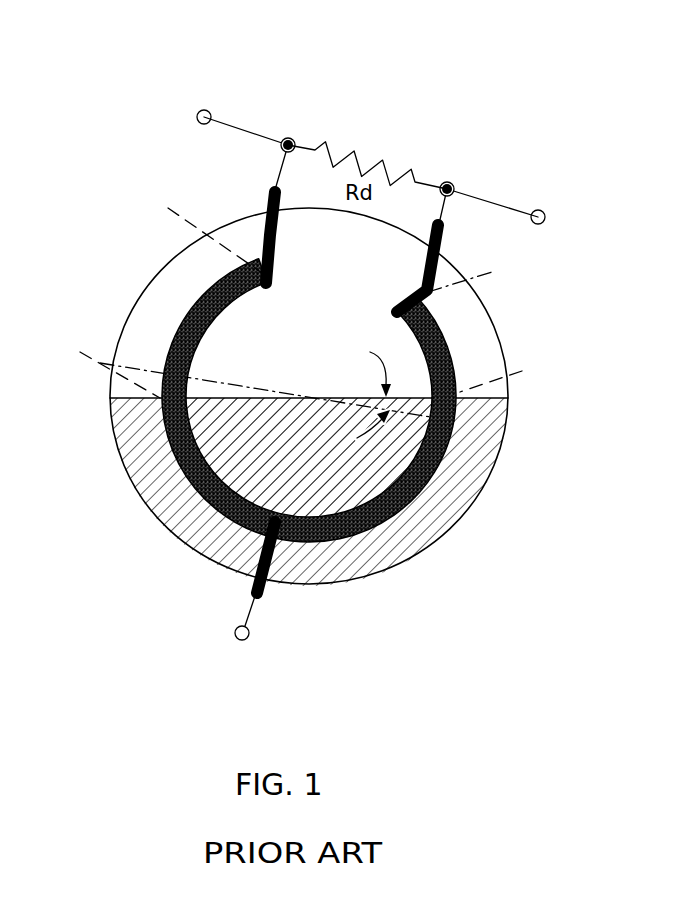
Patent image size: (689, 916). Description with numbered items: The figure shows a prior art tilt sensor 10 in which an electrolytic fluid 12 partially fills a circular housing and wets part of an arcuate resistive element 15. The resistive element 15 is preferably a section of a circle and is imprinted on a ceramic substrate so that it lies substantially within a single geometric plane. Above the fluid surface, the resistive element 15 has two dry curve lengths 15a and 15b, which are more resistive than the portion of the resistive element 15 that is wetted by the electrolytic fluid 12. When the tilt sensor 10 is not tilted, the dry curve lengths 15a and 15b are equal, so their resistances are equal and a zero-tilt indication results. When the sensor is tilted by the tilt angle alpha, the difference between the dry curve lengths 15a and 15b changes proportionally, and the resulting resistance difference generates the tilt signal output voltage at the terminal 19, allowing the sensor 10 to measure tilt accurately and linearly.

The tilt sensor 10 is at (131, 54).
The electrolytic fluid 12 is at (253, 452).
The resistive element 15 is at (197, 323).
The dry curve length 15a is at (163, 200).
The dry curve length 15b is at (495, 271).
The terminal 19 is at (236, 631).